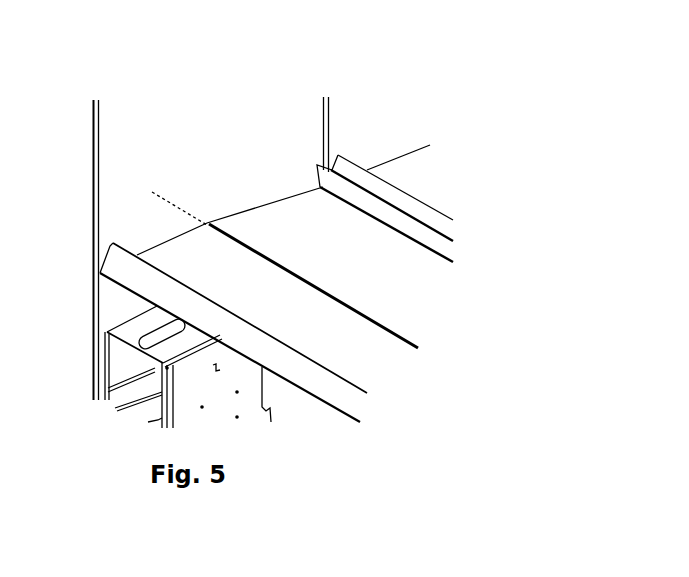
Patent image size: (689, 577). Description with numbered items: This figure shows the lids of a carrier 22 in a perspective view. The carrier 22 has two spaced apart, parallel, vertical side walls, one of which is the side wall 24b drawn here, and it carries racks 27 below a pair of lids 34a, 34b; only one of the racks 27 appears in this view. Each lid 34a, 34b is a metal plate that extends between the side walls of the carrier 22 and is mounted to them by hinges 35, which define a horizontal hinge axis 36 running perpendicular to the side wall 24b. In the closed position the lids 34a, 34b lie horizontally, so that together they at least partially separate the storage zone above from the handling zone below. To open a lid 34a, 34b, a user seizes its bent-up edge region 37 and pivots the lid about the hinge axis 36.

The carrier 22 is at (232, 65).
The side wall 24b is at (64, 250).
The rack 27 is at (128, 377).
The lid 34a is at (164, 231).
The lid 34b is at (330, 208).
The hinge 35 is at (291, 226).
The hinge axis 36 is at (169, 185).
The bent-up edge region 37 is at (200, 293).